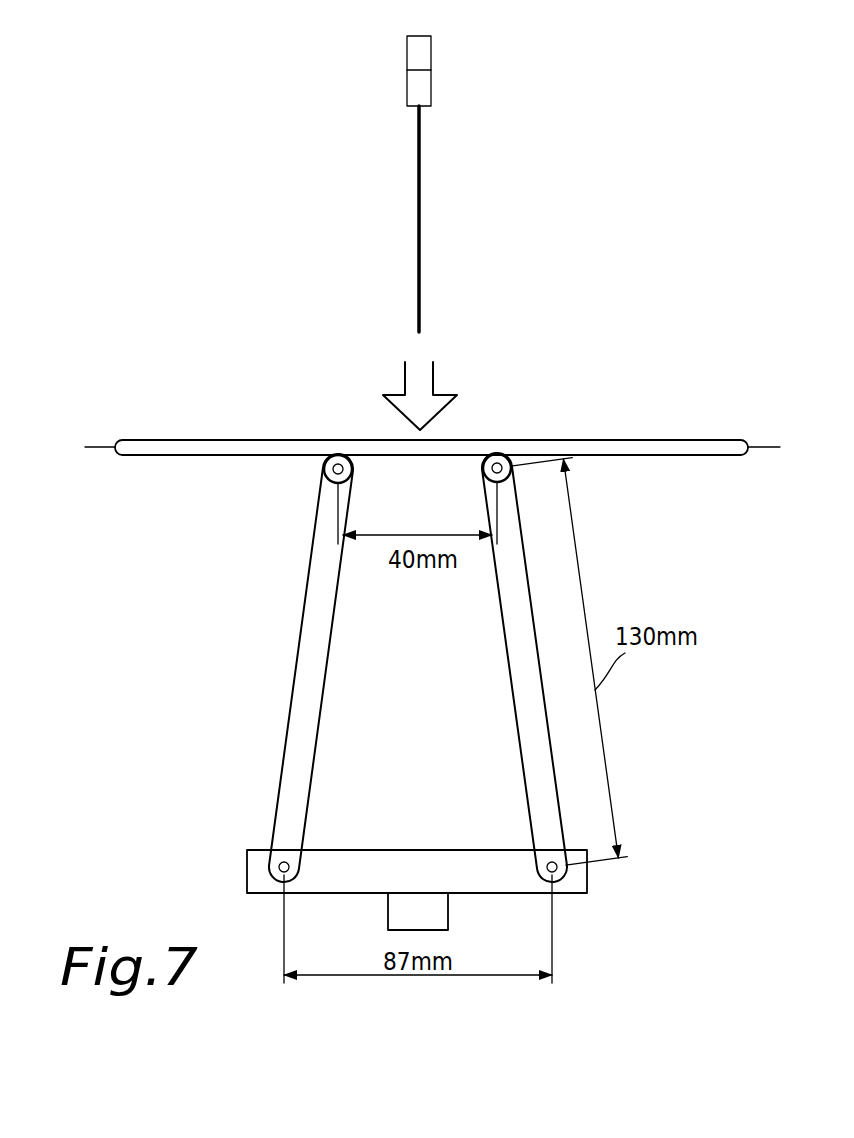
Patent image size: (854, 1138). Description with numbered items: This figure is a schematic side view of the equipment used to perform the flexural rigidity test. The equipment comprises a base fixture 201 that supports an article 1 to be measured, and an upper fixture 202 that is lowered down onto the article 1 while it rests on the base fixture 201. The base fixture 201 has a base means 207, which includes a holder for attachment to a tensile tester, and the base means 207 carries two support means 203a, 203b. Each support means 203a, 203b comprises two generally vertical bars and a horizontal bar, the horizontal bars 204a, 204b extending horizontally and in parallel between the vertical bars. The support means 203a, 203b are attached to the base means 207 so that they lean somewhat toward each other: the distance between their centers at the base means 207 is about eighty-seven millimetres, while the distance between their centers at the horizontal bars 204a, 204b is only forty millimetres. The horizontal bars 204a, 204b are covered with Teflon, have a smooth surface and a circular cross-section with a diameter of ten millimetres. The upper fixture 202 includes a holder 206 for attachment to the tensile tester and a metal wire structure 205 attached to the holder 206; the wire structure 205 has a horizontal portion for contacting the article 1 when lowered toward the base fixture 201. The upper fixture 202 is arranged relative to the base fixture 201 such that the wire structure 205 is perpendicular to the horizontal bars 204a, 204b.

The article 1 is at (712, 433).
The base fixture 201 is at (456, 691).
The upper fixture 202 is at (422, 184).
The support means 203a is at (308, 716).
The support means 203b is at (525, 687).
The horizontal bar 204a is at (322, 465).
The horizontal bar 204b is at (483, 464).
The metal wire structure 205 is at (419, 180).
The holder 206 is at (431, 80).
The base means 207 is at (432, 860).